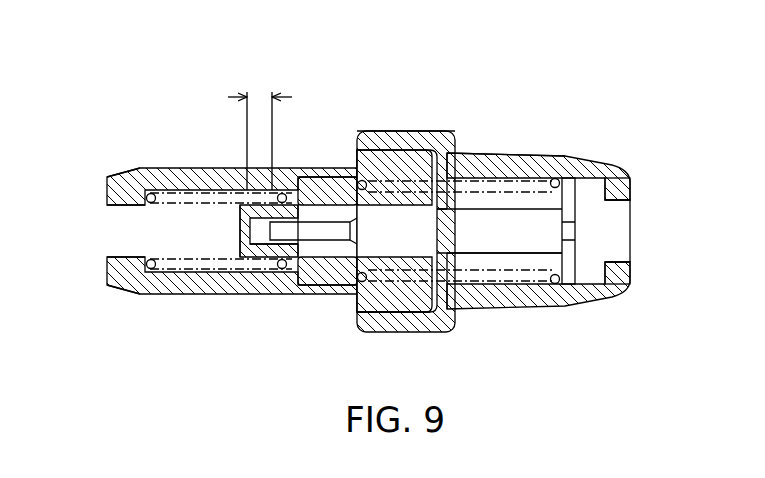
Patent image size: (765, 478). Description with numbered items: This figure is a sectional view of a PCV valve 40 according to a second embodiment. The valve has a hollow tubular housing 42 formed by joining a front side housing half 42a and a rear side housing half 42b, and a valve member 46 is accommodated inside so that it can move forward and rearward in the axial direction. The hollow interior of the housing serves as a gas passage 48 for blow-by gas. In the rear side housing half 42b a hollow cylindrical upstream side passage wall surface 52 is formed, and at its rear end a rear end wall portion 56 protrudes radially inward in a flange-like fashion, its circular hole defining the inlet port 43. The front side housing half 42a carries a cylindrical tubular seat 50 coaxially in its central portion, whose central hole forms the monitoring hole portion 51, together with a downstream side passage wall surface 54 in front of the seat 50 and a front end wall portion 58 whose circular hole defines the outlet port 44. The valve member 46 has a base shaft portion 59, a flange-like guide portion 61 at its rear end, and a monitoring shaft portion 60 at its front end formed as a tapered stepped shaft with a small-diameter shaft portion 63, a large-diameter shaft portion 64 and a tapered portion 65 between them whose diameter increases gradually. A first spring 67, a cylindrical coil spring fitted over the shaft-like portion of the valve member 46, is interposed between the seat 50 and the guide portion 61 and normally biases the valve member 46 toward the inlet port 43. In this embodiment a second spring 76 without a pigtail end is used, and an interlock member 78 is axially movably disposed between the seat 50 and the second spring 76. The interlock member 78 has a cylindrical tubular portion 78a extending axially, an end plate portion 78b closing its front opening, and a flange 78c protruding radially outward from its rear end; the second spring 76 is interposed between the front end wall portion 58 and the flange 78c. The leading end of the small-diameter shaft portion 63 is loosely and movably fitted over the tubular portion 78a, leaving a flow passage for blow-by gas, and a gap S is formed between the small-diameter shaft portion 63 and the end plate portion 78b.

The PCV valve 40 is at (457, 122).
The housing 42 is at (397, 129).
The front side housing half 42a is at (196, 188).
The rear side housing half 42b is at (548, 165).
The inlet port 43 is at (620, 236).
The outlet port 44 is at (108, 235).
The valve member 46 is at (498, 204).
The gas passage 48 is at (479, 269).
The seat 50 is at (330, 185).
The monitoring hole portion 51 is at (291, 190).
The upstream side passage wall surface 52 is at (617, 190).
The downstream side passage wall surface 54 is at (190, 268).
The rear end wall portion 56 is at (618, 193).
The front end wall portion 58 is at (107, 188).
The base shaft portion 59 is at (520, 255).
The monitoring shaft portion 60 is at (381, 258).
The guide portion 61 is at (566, 282).
The small-diameter shaft portion 63 is at (324, 238).
The large-diameter shaft portion 64 is at (418, 207).
The tapered portion 65 is at (364, 178).
The first spring 67 is at (362, 300).
The second spring 76 is at (152, 292).
The interlock member 78 is at (243, 262).
The tubular portion 78a is at (268, 262).
The end plate portion 78b is at (240, 229).
The flange 78c is at (291, 290).
The gap S is at (260, 128).